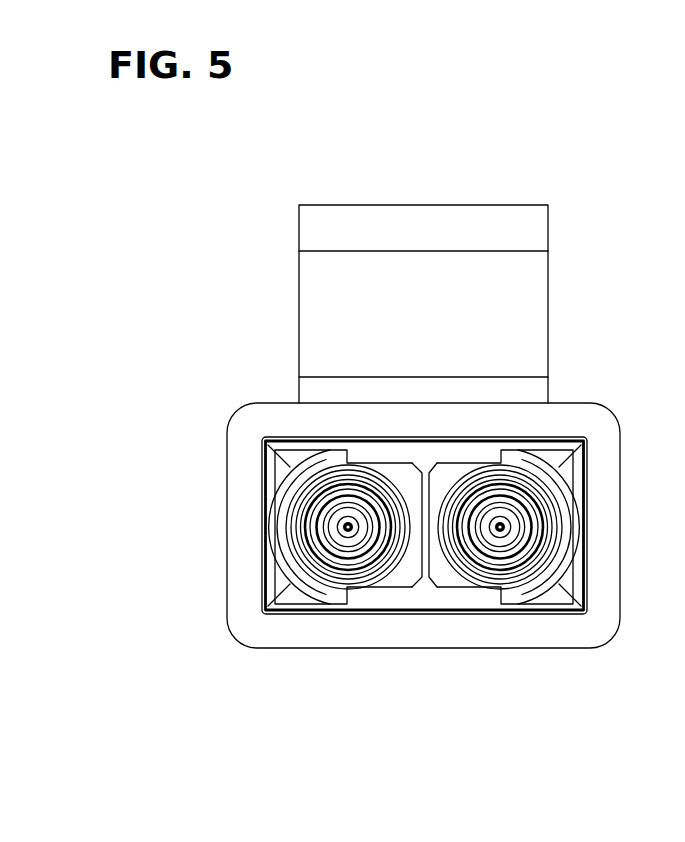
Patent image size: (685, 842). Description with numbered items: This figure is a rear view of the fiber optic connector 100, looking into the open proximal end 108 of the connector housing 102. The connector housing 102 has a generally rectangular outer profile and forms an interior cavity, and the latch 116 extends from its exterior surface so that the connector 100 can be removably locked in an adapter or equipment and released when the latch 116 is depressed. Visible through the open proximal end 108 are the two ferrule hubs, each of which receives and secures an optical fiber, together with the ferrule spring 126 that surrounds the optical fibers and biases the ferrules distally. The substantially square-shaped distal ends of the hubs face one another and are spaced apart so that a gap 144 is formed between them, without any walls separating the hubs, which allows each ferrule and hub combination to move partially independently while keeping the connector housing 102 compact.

The fiber optic connector 100 is at (574, 176).
The connector housing 102 is at (235, 413).
The proximal end 108 is at (240, 606).
The latch 116 is at (307, 230).
The ferrule spring 126 is at (273, 530).
The gap 144 is at (427, 577).